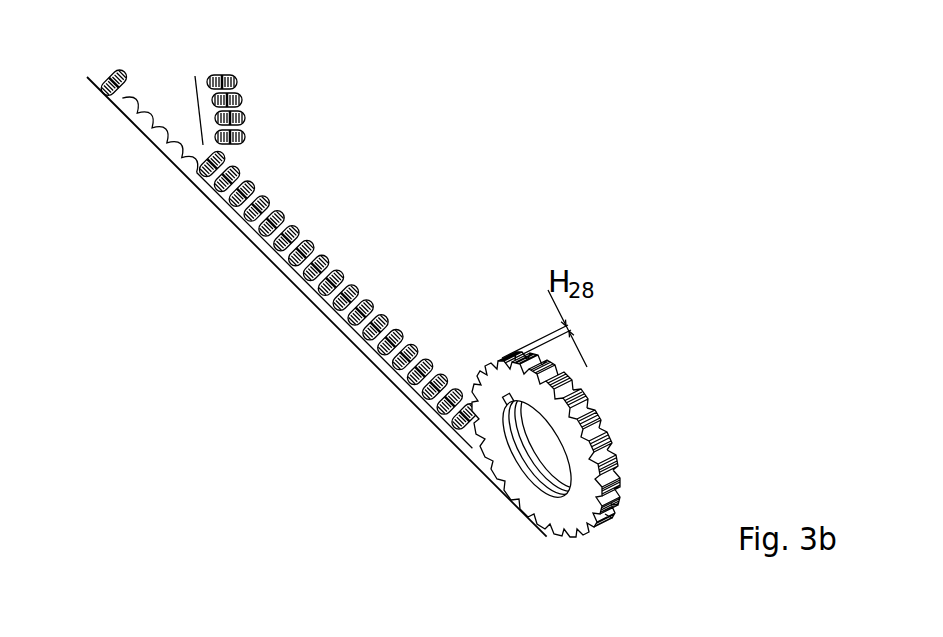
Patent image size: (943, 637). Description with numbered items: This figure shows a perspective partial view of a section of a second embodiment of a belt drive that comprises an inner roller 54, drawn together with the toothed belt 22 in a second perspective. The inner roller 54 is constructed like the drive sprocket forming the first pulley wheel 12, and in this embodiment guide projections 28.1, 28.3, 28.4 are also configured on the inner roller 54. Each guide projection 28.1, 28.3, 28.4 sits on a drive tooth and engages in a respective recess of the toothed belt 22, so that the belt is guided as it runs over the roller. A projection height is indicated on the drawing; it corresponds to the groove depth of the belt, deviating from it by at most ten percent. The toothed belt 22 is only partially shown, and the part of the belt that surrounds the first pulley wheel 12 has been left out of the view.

The first pulley wheel 12 is at (515, 468).
The toothed belt 22 is at (247, 242).
The inner roller 54 is at (188, 100).
The guide projection 28.1 is at (238, 140).
The guide projection 28.3 is at (245, 107).
The guide projection 28.4 is at (242, 125).